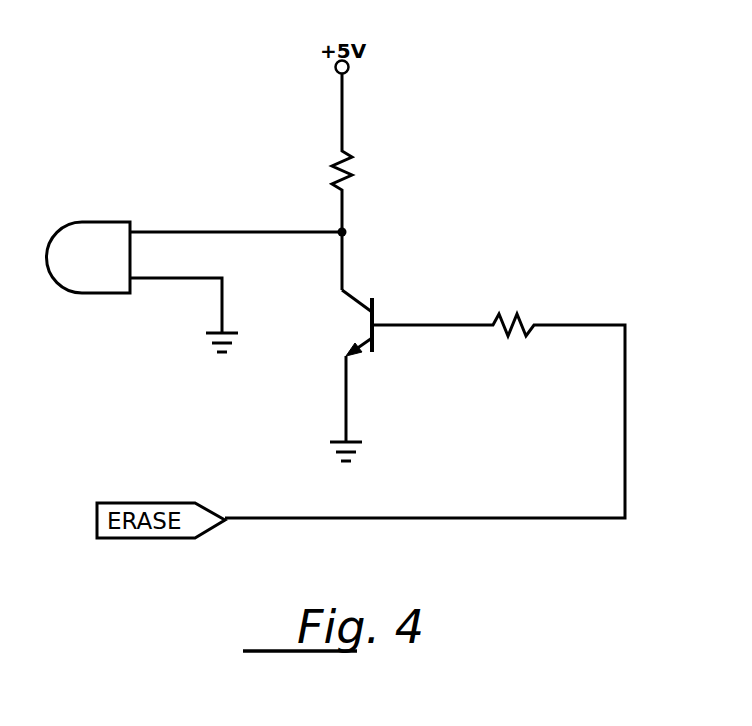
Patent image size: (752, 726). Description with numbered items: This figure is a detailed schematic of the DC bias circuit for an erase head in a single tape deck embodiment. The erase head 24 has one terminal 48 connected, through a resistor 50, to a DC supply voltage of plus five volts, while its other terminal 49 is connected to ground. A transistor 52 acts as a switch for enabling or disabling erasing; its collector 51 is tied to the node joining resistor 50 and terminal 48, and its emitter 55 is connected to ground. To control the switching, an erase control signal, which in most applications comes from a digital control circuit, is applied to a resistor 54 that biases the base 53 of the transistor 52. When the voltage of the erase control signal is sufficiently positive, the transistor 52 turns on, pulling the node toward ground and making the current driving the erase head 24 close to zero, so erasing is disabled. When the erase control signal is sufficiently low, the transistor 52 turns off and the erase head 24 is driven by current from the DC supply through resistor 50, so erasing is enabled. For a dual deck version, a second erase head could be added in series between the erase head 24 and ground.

The erase head 24 is at (94, 221).
The terminal 48 is at (150, 232).
The terminal 49 is at (150, 278).
The resistor 50 is at (331, 165).
The collector 51 is at (352, 296).
The transistor 52 is at (341, 283).
The base 53 is at (395, 325).
The resistor 54 is at (516, 315).
The emitter 55 is at (357, 358).